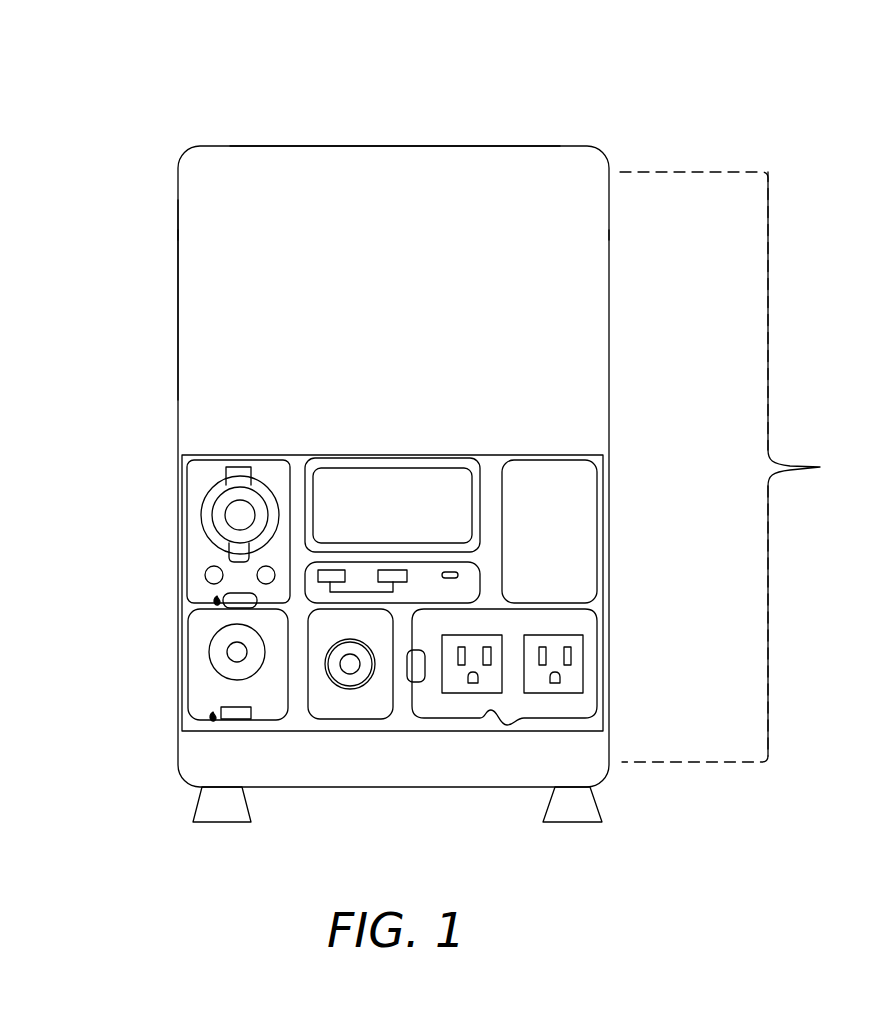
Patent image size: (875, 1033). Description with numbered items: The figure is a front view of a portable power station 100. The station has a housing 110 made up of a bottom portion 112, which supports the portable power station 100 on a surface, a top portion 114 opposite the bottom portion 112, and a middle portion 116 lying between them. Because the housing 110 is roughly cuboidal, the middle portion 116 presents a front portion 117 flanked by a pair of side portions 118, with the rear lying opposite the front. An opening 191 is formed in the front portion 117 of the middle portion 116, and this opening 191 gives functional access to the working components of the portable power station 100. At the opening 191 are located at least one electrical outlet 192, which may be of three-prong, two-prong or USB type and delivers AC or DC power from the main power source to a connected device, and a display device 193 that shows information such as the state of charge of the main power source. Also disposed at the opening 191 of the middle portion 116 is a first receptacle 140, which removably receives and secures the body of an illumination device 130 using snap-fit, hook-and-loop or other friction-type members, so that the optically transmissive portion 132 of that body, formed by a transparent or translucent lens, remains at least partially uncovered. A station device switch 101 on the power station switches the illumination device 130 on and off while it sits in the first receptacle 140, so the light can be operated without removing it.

The portable power station 100 is at (711, 56).
The housing 110 is at (168, 142).
The bottom portion 112 is at (323, 788).
The top portion 114 is at (338, 146).
The middle portion 116 is at (735, 467).
The front portion 117 is at (200, 316).
The side portions 118 is at (178, 228).
The opening 191 is at (609, 452).
The electrical outlet 192 is at (238, 516).
The display device 193 is at (354, 498).
The first receptacle 140 is at (200, 626).
The illumination device 130 is at (271, 682).
The optically transmissive portion 132 is at (230, 658).
The station device switch 101 is at (236, 715).